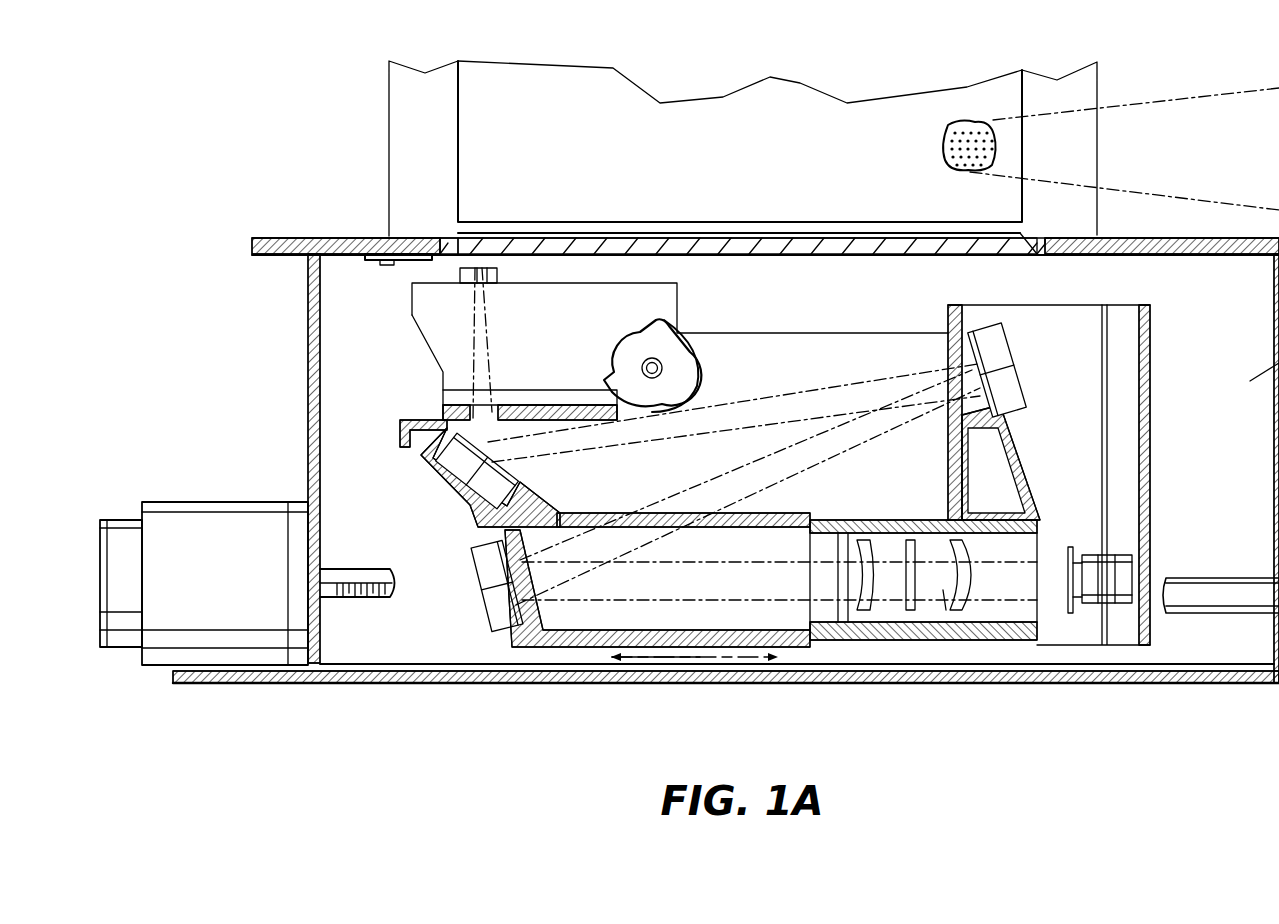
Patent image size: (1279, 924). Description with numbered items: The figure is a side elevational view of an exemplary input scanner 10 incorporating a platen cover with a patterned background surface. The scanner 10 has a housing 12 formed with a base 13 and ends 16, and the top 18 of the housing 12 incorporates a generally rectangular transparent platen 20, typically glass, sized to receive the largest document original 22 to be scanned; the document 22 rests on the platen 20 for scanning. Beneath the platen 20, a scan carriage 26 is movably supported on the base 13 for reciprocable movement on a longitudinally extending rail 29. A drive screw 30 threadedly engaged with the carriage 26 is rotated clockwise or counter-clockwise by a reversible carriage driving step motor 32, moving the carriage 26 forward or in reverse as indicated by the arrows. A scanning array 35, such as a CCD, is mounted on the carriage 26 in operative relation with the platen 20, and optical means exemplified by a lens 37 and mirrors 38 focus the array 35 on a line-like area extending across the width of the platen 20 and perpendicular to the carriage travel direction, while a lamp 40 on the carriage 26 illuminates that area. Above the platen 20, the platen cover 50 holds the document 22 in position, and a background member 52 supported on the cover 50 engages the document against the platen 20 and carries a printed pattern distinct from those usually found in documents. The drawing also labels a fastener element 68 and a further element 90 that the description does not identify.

The input scanner 10 is at (343, 120).
The housing 12 is at (262, 276).
The base 13 is at (470, 685).
The ends 16 is at (307, 387).
The top 18 is at (368, 238).
The transparent platen 20 is at (797, 257).
The document original 22 is at (735, 232).
The scan carriage 26 is at (870, 300).
The rails 29 is at (1228, 577).
The drive screw 30 is at (375, 568).
The reversible carriage driving step motor 32 is at (242, 500).
The scanning array 35 is at (1078, 628).
The lens 37 is at (942, 592).
The mirrors 38 is at (1005, 356).
The lamp 40 is at (668, 350).
The platen cover 50 is at (1097, 141).
The background member 52 is at (992, 118).
The bolt 68 is at (487, 270).
The seal 90 is at (383, 263).